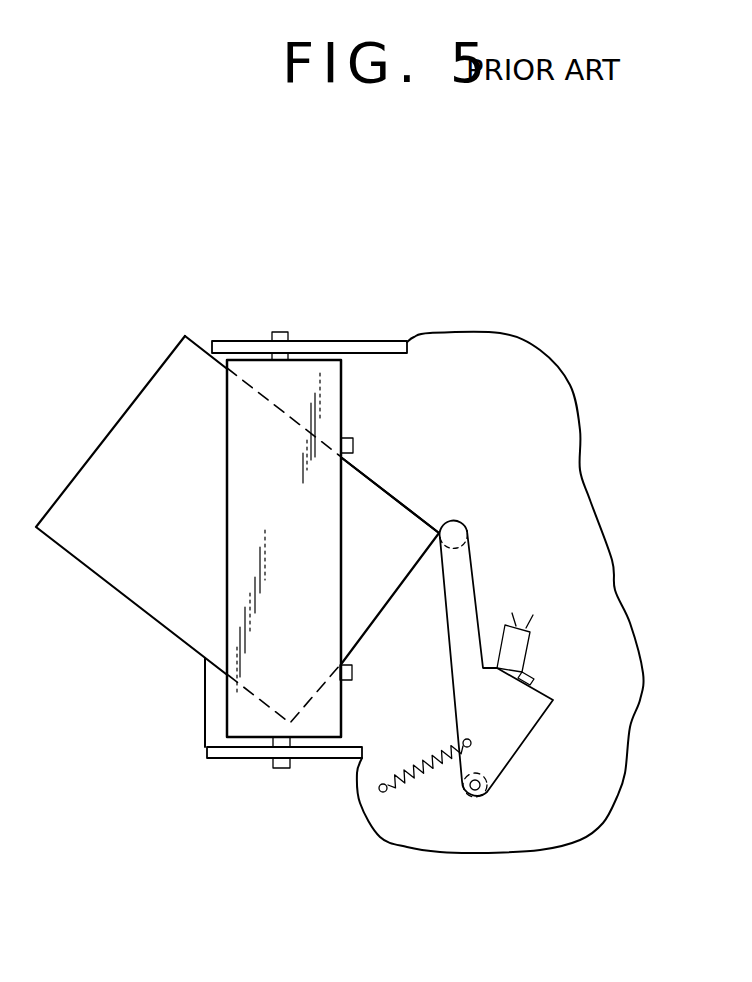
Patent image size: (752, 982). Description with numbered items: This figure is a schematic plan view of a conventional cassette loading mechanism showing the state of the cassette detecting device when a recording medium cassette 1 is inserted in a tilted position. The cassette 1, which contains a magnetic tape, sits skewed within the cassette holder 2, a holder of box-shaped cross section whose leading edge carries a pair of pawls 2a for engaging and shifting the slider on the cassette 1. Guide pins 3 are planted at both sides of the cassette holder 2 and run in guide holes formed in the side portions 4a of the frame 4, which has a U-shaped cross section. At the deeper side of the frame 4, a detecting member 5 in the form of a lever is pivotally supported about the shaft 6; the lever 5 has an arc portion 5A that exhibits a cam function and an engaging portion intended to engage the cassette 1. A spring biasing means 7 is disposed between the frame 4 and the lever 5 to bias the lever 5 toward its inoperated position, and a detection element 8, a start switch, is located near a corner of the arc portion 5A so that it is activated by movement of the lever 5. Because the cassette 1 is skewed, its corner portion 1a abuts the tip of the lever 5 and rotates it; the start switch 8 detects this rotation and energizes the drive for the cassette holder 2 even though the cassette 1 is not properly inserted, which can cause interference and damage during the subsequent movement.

The recording medium cassette 1 is at (160, 365).
The corner portion 1a is at (393, 490).
The cassette holder 2 is at (248, 352).
The pawls 2a is at (353, 437).
The guide pins 3 is at (280, 333).
The frame 4 is at (552, 440).
The side portions 4a is at (340, 338).
The detecting member 5 is at (530, 733).
The arc portion 5A is at (540, 688).
The shaft 6 is at (482, 790).
The spring biasing means 7 is at (432, 778).
The detection element 8 is at (530, 650).